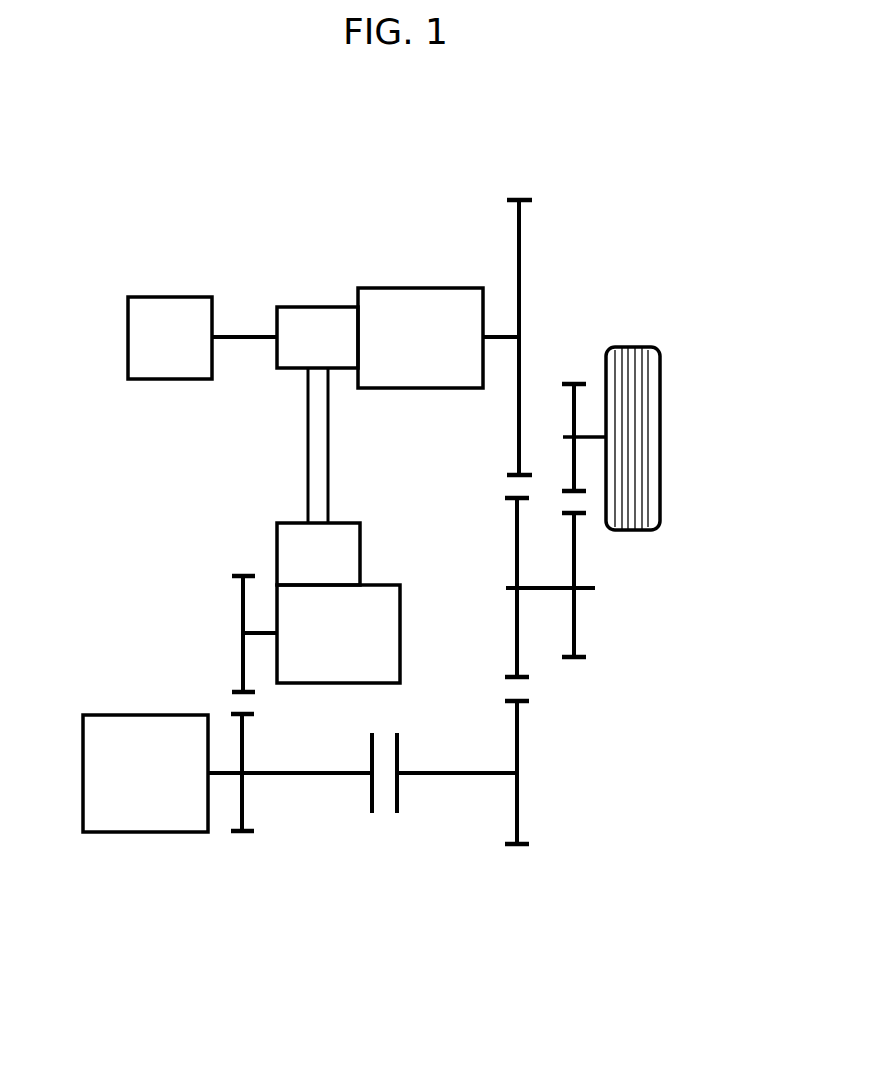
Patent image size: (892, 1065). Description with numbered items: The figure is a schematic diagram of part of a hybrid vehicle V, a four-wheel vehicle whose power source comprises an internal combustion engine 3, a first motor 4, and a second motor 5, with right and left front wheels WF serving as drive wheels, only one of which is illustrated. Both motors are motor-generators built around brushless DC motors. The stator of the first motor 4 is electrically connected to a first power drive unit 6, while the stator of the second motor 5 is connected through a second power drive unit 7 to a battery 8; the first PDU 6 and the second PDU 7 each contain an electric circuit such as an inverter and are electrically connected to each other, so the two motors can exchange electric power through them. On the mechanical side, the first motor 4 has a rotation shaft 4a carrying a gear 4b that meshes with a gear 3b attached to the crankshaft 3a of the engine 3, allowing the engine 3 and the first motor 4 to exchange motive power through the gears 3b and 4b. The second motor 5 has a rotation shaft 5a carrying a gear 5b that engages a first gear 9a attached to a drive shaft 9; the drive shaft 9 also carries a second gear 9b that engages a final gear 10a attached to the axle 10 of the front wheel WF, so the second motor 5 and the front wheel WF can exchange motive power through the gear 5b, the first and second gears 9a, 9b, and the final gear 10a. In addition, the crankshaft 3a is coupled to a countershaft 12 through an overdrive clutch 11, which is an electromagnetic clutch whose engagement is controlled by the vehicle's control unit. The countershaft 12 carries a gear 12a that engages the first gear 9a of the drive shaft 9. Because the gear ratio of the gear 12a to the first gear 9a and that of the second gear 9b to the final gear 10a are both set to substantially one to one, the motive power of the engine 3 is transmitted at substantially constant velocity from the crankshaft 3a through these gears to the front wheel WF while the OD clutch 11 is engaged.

The hybrid vehicle V is at (656, 221).
The internal combustion engine 3 is at (135, 715).
The crankshaft 3a is at (226, 776).
The gear 3b is at (246, 833).
The first motor 4 is at (389, 585).
The rotation shaft 4a is at (262, 633).
The gear 4b is at (236, 576).
The second motor 5 is at (426, 288).
The rotation shaft 5a is at (503, 337).
The gear 5b is at (532, 200).
The first power drive unit 6 is at (361, 523).
The second power drive unit 7 is at (318, 307).
The battery 8 is at (168, 297).
The drive shaft 9 is at (540, 590).
The first gear 9a is at (511, 499).
The second gear 9b is at (580, 658).
The axle 10 is at (595, 437).
The final gear 10a is at (574, 384).
The overdrive clutch 11 is at (370, 805).
The countershaft 12 is at (446, 776).
The gear 12a is at (524, 845).
The front wheel WF is at (660, 403).